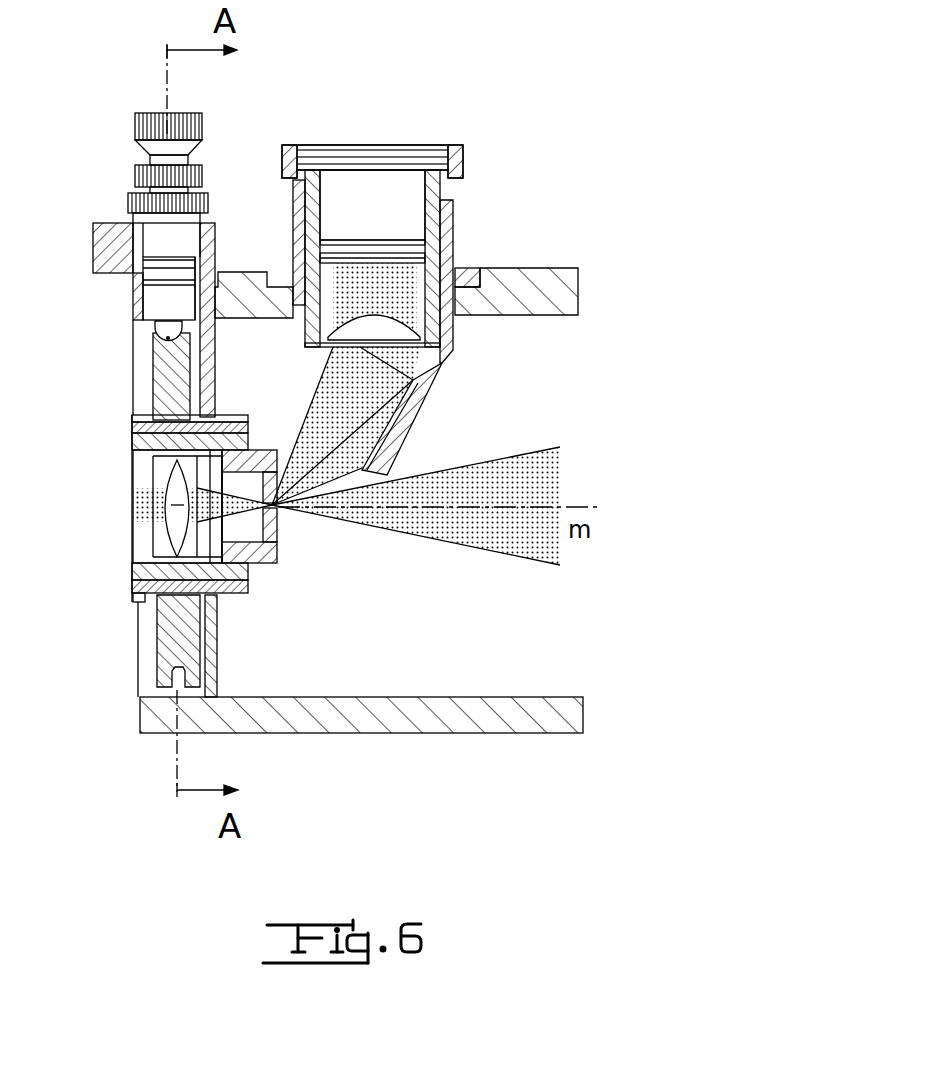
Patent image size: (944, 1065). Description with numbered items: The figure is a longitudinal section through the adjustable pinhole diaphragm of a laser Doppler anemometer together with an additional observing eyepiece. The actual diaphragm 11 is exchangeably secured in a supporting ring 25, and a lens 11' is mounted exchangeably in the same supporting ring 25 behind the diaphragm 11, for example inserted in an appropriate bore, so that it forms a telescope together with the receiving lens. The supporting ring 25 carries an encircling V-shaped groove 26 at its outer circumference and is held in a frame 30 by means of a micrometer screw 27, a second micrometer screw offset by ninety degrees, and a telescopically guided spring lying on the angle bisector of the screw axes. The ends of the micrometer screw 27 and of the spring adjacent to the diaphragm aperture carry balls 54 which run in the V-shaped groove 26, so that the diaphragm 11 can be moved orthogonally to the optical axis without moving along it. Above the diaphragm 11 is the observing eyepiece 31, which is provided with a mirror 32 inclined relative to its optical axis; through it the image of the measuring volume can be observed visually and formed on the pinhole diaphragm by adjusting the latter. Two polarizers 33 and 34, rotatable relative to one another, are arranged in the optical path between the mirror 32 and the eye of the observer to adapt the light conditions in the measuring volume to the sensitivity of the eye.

The micrometer screw 27 is at (128, 203).
The frame 30 is at (120, 253).
The ball 54 is at (153, 332).
The supporting ring 25 is at (173, 370).
The lens 11' is at (112, 515).
The diaphragm 11 is at (275, 530).
The V-shaped groove 26 is at (190, 680).
The observing eyepiece 31 is at (388, 217).
The polarizer 33 is at (450, 223).
The polarizer 34 is at (432, 254).
The mirror 32 is at (403, 400).